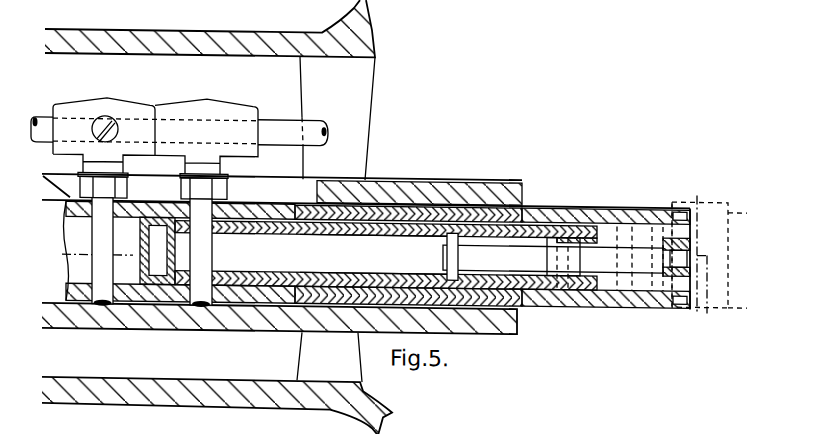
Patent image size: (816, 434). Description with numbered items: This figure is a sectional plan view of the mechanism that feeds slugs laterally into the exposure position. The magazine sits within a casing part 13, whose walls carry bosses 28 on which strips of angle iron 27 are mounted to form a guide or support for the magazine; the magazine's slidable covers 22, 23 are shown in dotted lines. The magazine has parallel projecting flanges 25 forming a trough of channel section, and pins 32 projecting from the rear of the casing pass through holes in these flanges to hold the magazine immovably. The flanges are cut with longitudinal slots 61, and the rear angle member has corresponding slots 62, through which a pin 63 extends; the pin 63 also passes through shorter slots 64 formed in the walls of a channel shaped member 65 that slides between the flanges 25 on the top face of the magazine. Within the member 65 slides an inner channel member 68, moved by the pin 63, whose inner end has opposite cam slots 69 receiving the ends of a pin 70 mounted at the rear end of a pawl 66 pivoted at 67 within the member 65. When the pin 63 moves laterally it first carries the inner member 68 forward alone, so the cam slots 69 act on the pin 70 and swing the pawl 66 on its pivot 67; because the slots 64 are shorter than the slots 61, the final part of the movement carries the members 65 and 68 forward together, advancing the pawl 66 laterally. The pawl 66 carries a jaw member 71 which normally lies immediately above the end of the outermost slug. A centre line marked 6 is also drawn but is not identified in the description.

The casing part 13 is at (184, 42).
The bosses 28 is at (336, 219).
The slots 62 is at (267, 139).
The longitudinal slots 61 is at (268, 280).
The strips of angle iron 27 is at (360, 217).
The pin 70 is at (450, 277).
The upper flanges 25 is at (560, 202).
The jaw member 71 is at (662, 218).
The slidable cover 22 is at (690, 194).
The slidable cover 23 is at (718, 194).
The cam slots 69 is at (417, 232).
The pins 32 is at (92, 226).
The axis 6 is at (378, 262).
The channel shaped member 65 is at (535, 286).
The pivot 67 is at (563, 274).
The pawl 66 is at (615, 262).
The pin 63 is at (196, 250).
The slots 64 is at (262, 220).
The inner member 68 is at (290, 282).